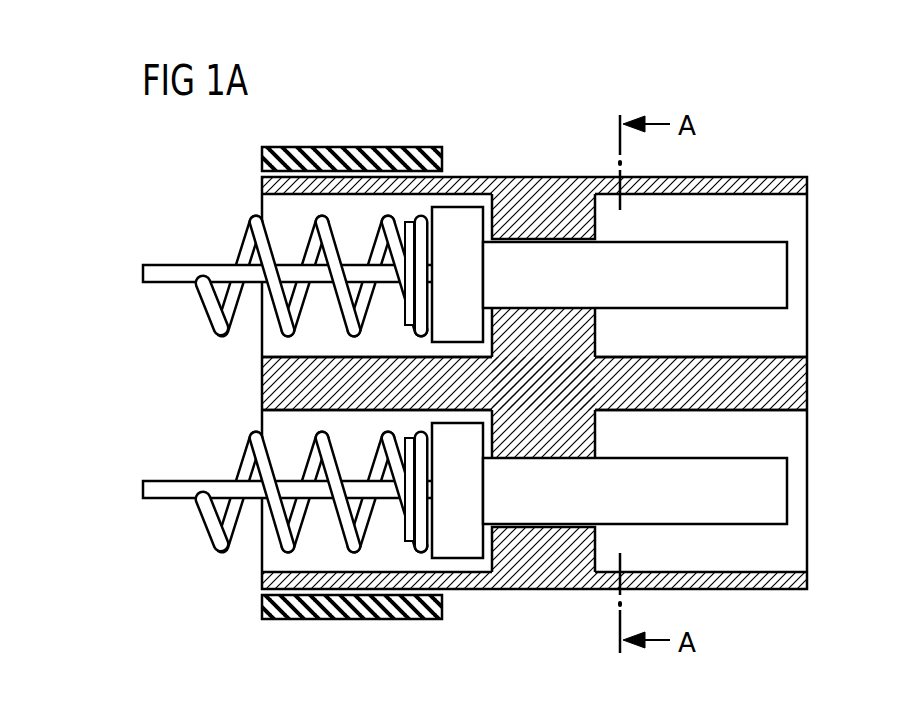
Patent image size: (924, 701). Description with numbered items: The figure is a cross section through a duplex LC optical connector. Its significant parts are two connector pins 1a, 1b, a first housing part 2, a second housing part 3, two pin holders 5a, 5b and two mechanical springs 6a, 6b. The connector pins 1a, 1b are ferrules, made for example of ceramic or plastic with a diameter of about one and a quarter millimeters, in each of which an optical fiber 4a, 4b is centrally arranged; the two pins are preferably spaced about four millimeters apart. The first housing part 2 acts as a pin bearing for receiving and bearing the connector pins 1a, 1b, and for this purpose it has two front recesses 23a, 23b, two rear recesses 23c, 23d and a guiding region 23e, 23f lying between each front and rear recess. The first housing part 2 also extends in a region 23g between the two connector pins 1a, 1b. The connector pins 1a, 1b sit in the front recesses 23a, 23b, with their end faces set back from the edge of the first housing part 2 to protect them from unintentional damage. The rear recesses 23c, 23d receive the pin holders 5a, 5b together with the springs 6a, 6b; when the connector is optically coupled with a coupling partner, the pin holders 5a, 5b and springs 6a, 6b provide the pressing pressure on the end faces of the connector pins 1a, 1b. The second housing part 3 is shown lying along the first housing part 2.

The connector pin 1a is at (775, 277).
The connector pin 1b is at (775, 492).
The first housing part 2 is at (537, 381).
The second housing part 3 is at (418, 152).
The optical fiber 4a is at (170, 272).
The optical fiber 4b is at (170, 489).
The pin holder 5a is at (454, 218).
The pin holder 5b is at (458, 556).
The mechanical spring 6a is at (208, 313).
The mechanical spring 6b is at (208, 529).
The front recess 23a is at (790, 215).
The front recess 23b is at (785, 548).
The rear recess 23c is at (274, 205).
The rear recess 23d is at (274, 423).
The guiding region 23e is at (565, 220).
The guiding region 23f is at (562, 548).
The region 23g is at (795, 384).